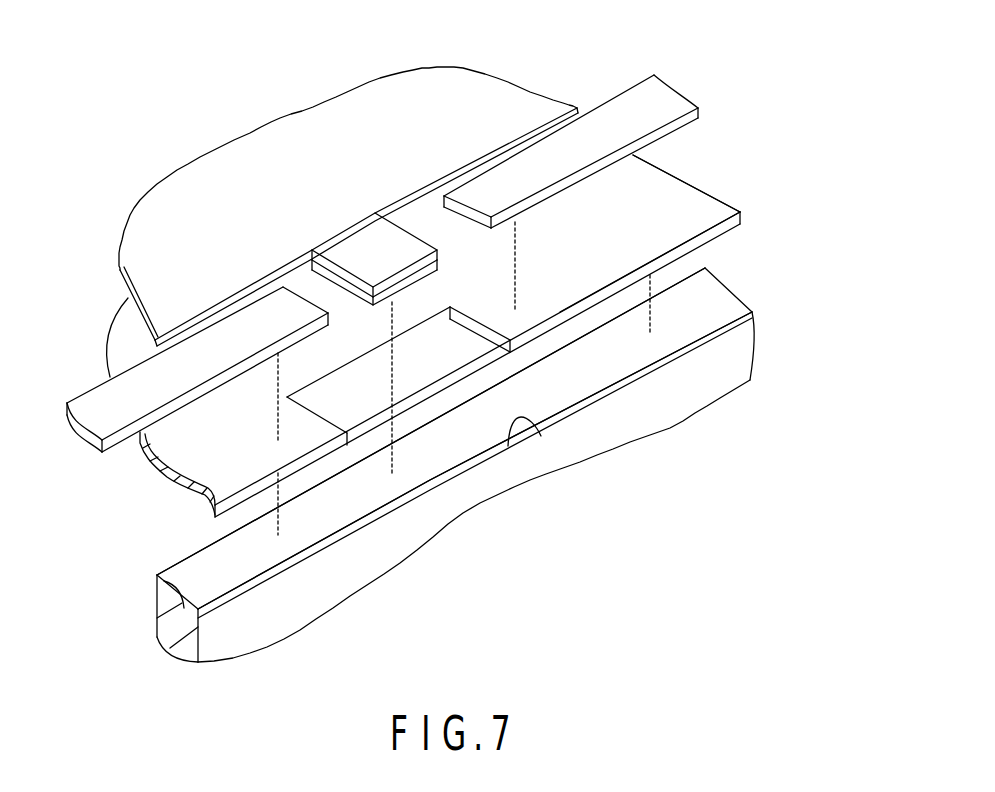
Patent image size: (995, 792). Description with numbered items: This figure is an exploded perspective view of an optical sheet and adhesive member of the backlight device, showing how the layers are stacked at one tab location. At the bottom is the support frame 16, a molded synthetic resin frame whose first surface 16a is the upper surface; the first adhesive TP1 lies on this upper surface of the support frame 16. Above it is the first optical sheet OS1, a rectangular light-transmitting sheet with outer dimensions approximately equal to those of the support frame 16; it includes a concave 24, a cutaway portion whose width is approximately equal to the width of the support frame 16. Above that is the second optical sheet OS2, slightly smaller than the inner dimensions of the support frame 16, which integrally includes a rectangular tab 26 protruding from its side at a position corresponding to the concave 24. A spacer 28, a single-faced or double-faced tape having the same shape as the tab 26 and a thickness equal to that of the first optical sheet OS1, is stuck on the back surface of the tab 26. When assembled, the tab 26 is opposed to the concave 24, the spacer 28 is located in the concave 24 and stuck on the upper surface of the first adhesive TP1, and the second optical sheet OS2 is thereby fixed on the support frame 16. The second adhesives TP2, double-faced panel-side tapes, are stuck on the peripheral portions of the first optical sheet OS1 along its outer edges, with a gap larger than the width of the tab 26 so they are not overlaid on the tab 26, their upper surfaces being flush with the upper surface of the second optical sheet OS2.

The second optical sheet OS2 is at (417, 86).
The second adhesive TP2 is at (623, 113).
The first optical sheet OS1 is at (670, 200).
The tab 26 is at (403, 252).
The spacer 28 is at (413, 287).
The concave 24 is at (405, 388).
The support frame 16 is at (618, 427).
The first surface 16a is at (540, 432).
The first adhesive TP1 is at (317, 528).